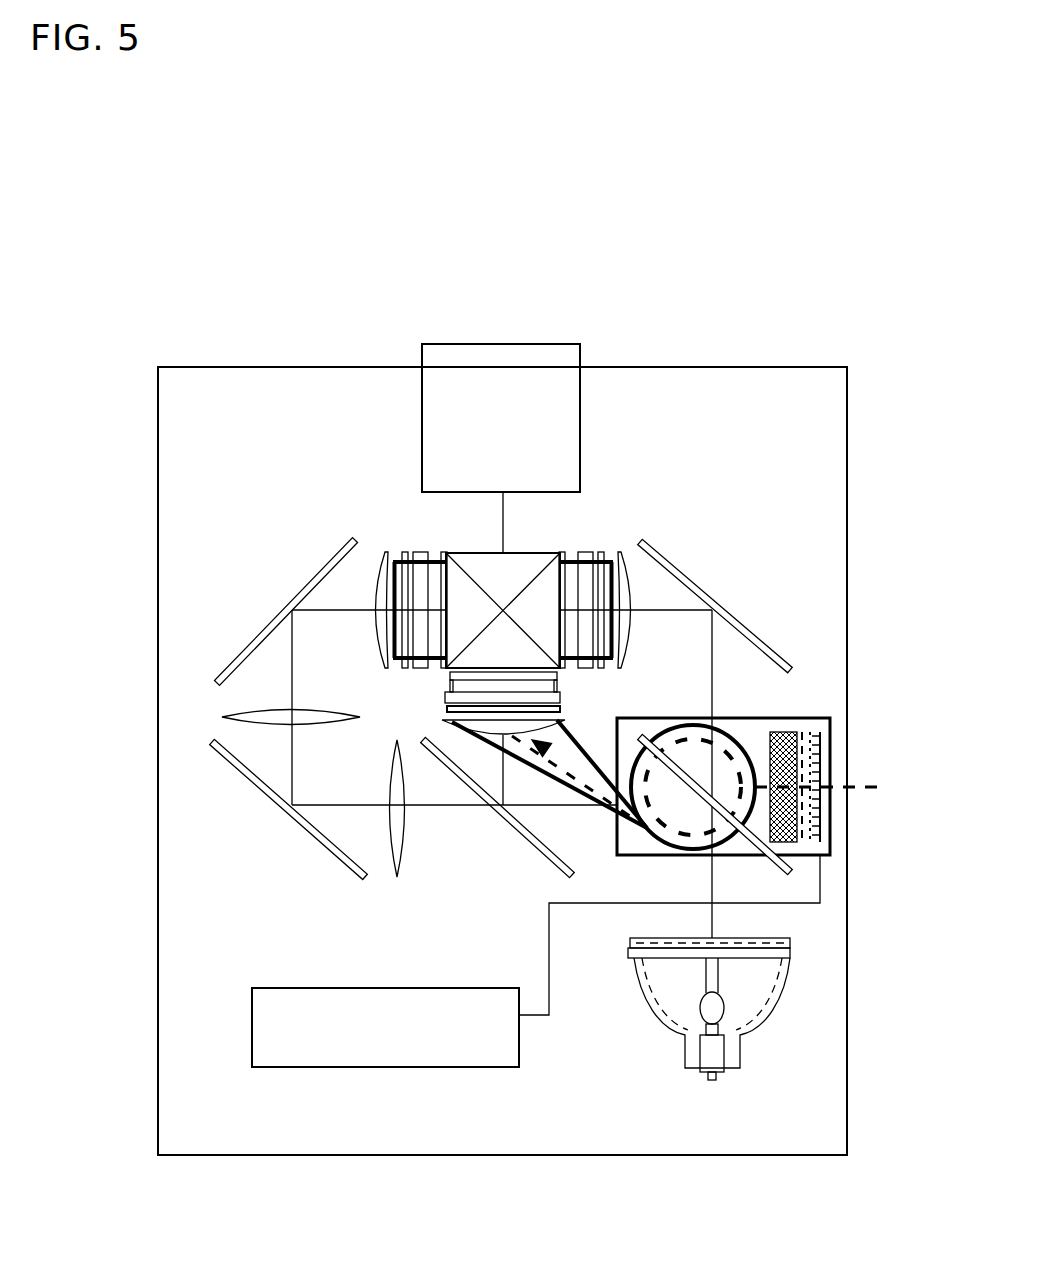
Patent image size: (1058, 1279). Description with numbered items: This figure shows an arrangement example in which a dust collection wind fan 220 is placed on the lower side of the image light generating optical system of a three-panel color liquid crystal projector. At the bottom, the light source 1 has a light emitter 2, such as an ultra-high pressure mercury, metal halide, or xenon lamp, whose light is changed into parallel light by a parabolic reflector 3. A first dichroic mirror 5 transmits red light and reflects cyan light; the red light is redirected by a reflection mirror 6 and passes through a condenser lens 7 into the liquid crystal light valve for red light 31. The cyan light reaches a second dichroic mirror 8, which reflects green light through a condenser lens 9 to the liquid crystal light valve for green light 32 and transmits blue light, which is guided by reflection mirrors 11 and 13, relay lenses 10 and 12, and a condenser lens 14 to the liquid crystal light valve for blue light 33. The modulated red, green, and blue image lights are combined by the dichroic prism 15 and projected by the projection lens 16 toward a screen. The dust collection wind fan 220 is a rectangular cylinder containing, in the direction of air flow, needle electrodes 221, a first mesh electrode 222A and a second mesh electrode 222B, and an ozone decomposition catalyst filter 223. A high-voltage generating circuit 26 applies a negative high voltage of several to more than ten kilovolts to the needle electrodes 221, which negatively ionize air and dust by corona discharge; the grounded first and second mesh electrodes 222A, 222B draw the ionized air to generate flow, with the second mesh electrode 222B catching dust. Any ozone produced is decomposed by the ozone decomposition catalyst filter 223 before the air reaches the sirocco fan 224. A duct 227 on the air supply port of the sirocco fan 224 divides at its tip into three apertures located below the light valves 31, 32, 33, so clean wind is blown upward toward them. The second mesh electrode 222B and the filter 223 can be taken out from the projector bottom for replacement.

The light source 1 is at (680, 1009).
The light emitter 2 is at (705, 1010).
The parabolic reflector 3 is at (690, 1032).
The first dichroic mirror 5 is at (780, 870).
The reflection mirror 6 is at (690, 574).
The condenser lens 7 is at (623, 630).
The second dichroic mirror 8 is at (526, 838).
The condenser lens 9 is at (447, 728).
The relay lens 10 is at (397, 880).
The reflection mirror 11 is at (306, 829).
The relay lens 12 is at (220, 716).
The reflection mirror 13 is at (253, 640).
The condenser lens 14 is at (373, 625).
The dichroic prism 15 is at (473, 556).
The projection lens 16 is at (580, 418).
The high-voltage generating circuit 26 is at (250, 1018).
The liquid crystal light valve for red light 31 is at (595, 536).
The liquid crystal light valve for green light 32 is at (575, 705).
The liquid crystal light valve for blue light 33 is at (410, 536).
The dust collection wind fan 220 is at (783, 792).
The needle electrodes 221 is at (822, 732).
The first mesh electrode 222A is at (812, 730).
The second mesh electrode 222B is at (804, 730).
The ozone decomposition catalyst filter 223 is at (779, 730).
The sirocco fan 224 is at (670, 860).
The duct 227 is at (538, 768).